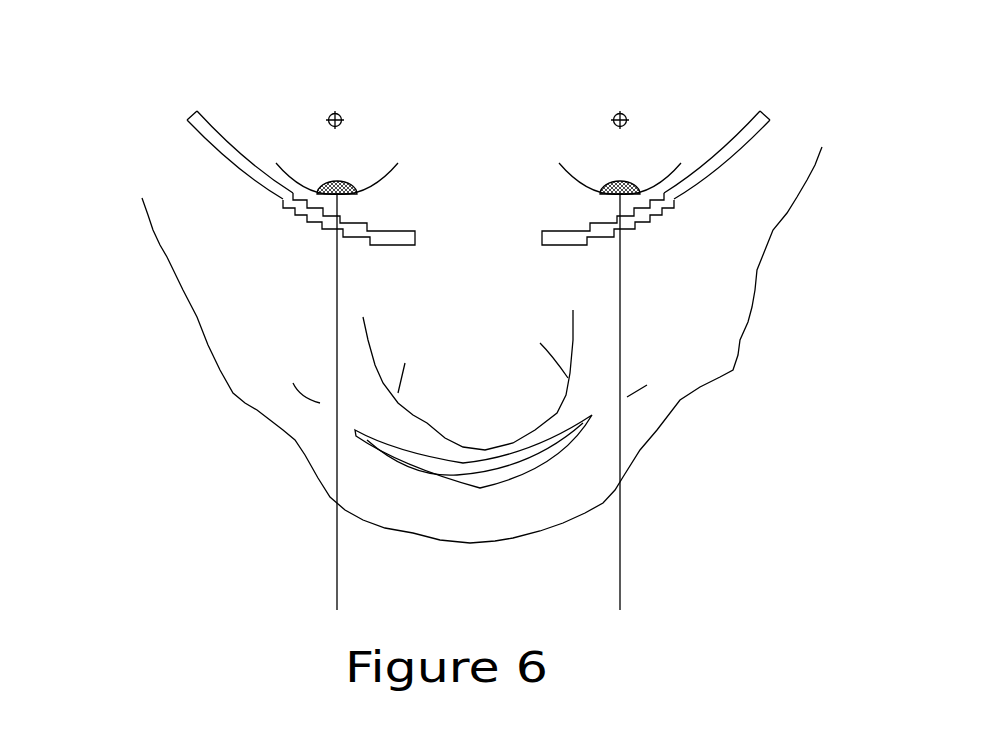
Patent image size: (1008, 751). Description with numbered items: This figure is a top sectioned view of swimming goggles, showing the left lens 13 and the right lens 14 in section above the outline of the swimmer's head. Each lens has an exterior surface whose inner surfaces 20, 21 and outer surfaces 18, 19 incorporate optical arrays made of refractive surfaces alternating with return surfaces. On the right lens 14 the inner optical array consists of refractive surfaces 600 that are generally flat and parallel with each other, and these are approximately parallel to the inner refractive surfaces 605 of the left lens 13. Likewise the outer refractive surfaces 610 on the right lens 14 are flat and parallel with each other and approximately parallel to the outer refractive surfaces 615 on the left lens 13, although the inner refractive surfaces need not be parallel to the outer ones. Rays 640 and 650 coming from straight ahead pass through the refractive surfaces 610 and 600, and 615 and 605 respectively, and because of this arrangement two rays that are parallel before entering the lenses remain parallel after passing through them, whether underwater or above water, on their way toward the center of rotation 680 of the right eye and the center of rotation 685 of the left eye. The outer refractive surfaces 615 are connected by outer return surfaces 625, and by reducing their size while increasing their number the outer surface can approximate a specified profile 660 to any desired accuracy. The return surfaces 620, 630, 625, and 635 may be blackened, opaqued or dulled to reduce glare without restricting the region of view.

The left lens 13 is at (568, 233).
The right lens 14 is at (235, 170).
The outer surface 18 is at (561, 250).
The outer surface 19 is at (240, 190).
The inner surface 20 is at (703, 165).
The inner surface 21 is at (278, 168).
The inner refractive surfaces 600 is at (353, 217).
The inner refractive surfaces 605 is at (658, 187).
The outer refractive surfaces 610 is at (353, 244).
The outer refractive surfaces 615 is at (607, 248).
The return surfaces 620 is at (370, 225).
The outer return surfaces 625 is at (642, 232).
The return surfaces 630 is at (317, 230).
The return surfaces 635 is at (583, 222).
The ray 640 is at (328, 558).
The ray 650 is at (632, 520).
The profile 660 is at (573, 258).
The center of rotation of the right eye 680 is at (343, 112).
The center of rotation of the left eye 685 is at (603, 118).